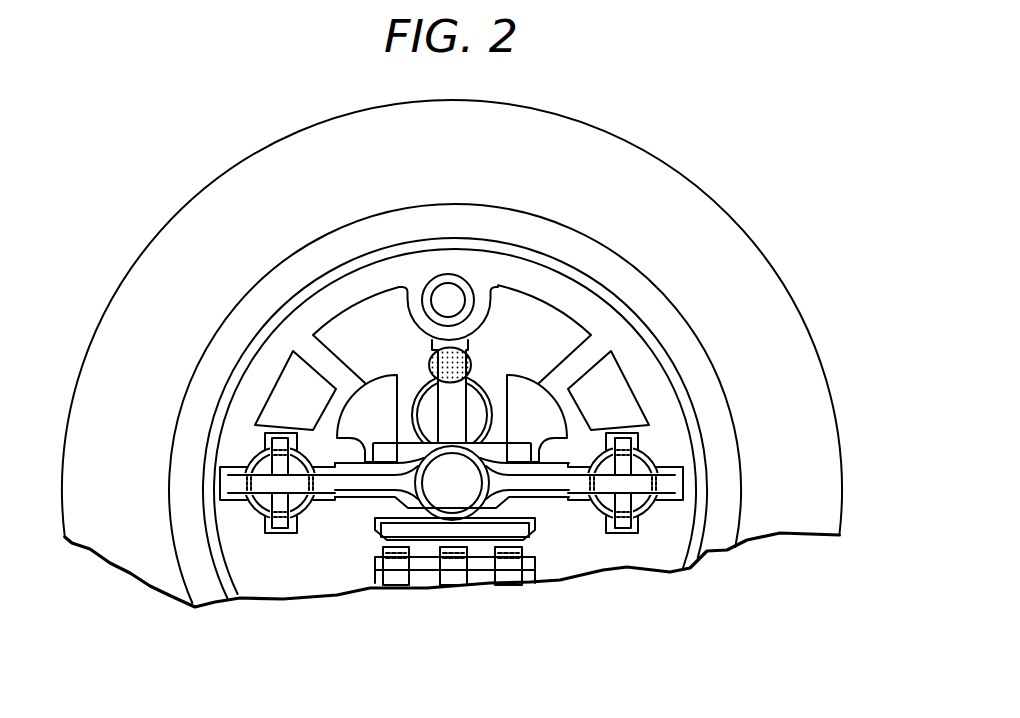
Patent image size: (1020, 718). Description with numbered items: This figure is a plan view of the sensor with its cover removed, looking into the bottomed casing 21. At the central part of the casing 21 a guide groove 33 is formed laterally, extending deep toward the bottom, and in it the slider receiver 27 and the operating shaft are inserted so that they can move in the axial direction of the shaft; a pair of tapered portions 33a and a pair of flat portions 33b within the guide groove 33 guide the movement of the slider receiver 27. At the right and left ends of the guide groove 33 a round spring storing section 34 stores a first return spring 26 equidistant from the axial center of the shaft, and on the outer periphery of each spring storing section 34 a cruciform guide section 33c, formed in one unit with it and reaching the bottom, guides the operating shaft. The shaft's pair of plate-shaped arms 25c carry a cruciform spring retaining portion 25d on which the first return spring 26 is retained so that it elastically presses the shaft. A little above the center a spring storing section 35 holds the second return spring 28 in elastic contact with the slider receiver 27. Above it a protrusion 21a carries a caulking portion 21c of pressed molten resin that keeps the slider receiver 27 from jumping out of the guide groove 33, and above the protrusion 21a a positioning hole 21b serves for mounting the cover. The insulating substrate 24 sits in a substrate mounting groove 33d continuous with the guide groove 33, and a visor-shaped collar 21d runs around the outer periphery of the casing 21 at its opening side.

The casing 21 is at (604, 106).
The protrusion 21a is at (495, 287).
The positioning hole 21b is at (449, 296).
The caulking portion 21c is at (404, 282).
The visor-shaped collar 21d is at (717, 230).
The insulating substrate 24 is at (428, 566).
The arms 25c is at (272, 430).
The spring retaining portion 25d is at (240, 464).
The first return spring 26 is at (258, 545).
The slider receiver 27 is at (357, 480).
The second return spring 28 is at (467, 386).
The guide groove 33 is at (308, 518).
The tapered portions 33a is at (325, 520).
The flat portions 33b is at (265, 402).
The cruciform guide section 33c is at (265, 436).
The substrate mounting groove 33d is at (386, 576).
The spring storing section 34 is at (262, 518).
The spring storing section 35 is at (382, 437).